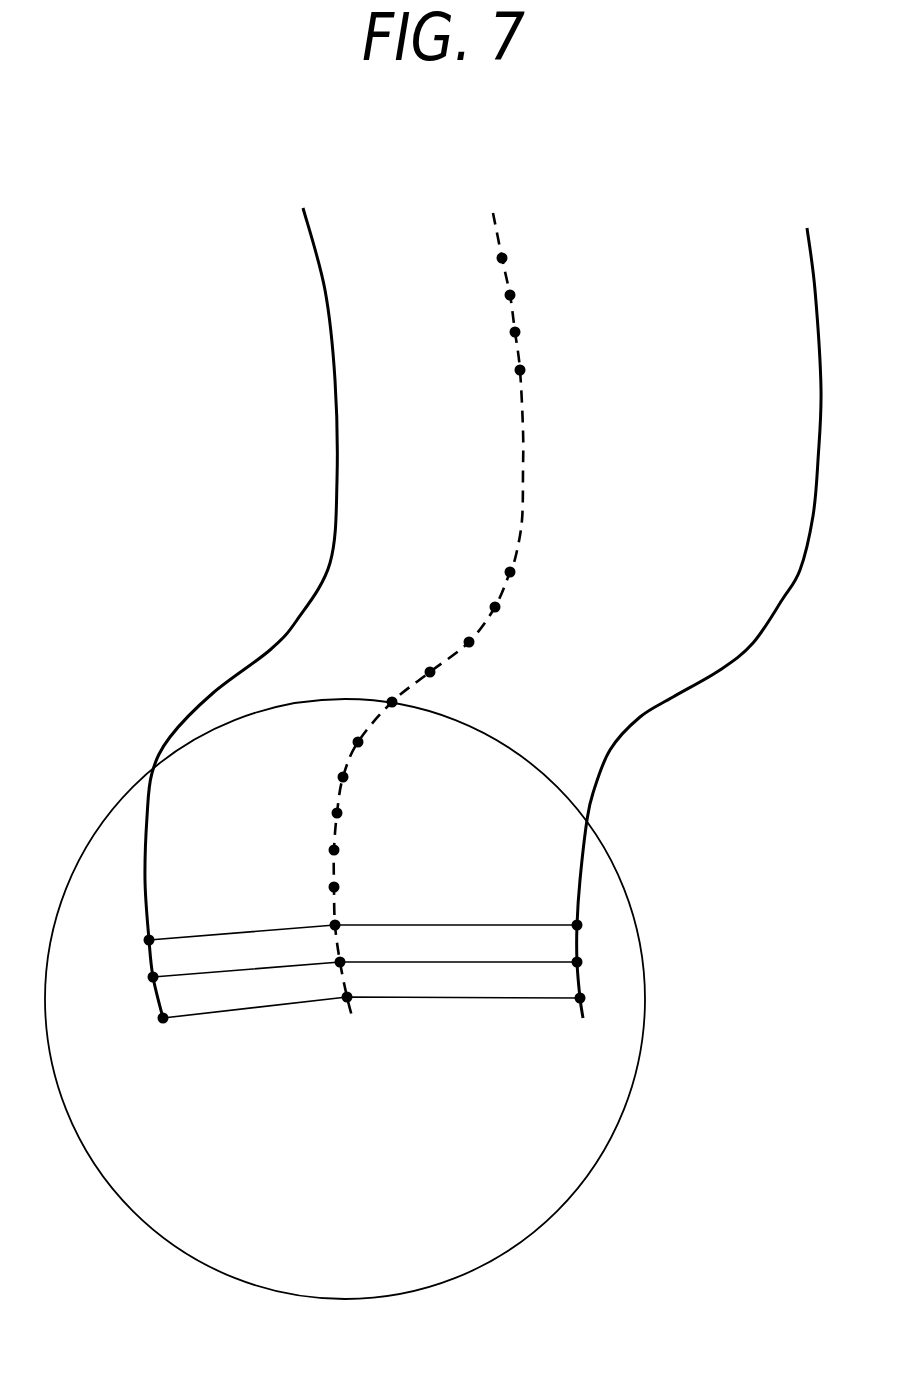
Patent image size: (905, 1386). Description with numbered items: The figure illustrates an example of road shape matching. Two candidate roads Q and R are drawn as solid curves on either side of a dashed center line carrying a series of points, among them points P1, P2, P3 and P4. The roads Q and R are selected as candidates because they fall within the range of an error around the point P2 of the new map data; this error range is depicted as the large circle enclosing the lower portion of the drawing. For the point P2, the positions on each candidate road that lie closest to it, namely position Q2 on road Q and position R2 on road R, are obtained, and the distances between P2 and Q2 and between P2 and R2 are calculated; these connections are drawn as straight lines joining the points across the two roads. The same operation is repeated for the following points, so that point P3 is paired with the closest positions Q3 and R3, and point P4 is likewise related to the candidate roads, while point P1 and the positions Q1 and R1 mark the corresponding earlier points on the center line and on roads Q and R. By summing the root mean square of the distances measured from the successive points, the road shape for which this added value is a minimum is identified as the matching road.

The road R is at (241, 613).
The road Q is at (699, 623).
The position on road R R1 is at (140, 1020).
The position on road R R2 is at (130, 978).
The position on road R R3 is at (125, 941).
The point P1 is at (371, 1028).
The point P2 is at (365, 982).
The point P3 is at (361, 947).
The point P4 is at (359, 910).
The position on road Q Q1 is at (601, 996).
The position on road Q Q2 is at (601, 960).
The position on road Q Q3 is at (601, 923).